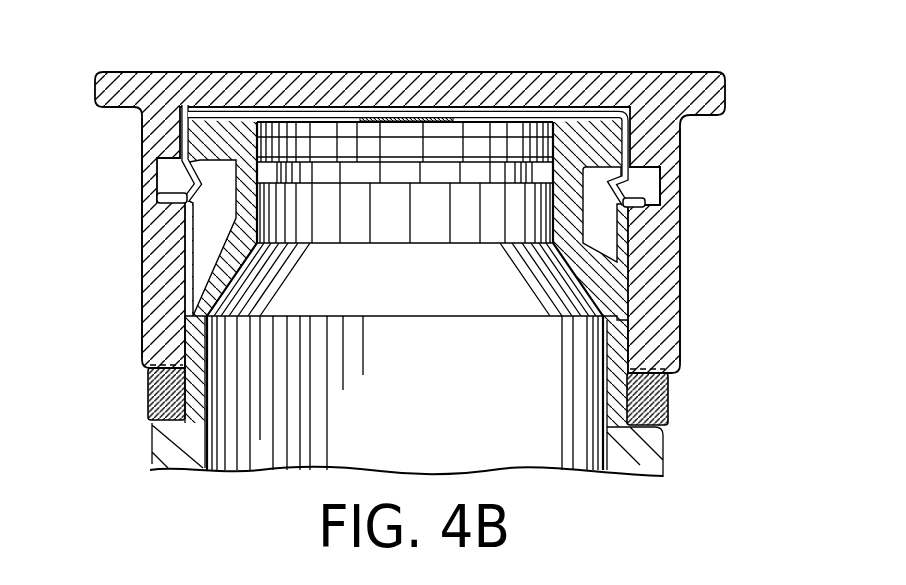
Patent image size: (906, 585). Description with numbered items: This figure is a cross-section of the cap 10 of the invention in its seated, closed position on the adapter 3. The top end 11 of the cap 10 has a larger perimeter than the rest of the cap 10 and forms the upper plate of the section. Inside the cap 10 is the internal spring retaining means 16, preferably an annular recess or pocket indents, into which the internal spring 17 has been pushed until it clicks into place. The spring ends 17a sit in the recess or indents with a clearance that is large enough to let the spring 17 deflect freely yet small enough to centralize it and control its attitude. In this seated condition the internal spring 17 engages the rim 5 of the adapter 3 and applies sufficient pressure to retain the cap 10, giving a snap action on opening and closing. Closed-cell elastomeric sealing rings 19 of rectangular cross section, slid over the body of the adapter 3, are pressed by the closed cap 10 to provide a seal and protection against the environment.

The adapter 3 is at (620, 263).
The rim 5 is at (140, 136).
The cap 10 is at (679, 320).
The top end 11 is at (727, 100).
The internal spring retaining means 16 is at (662, 168).
The internal spring 17 is at (593, 117).
The spring ends 17a is at (143, 186).
The closed-cell elastomeric sealing rings 19 is at (670, 398).